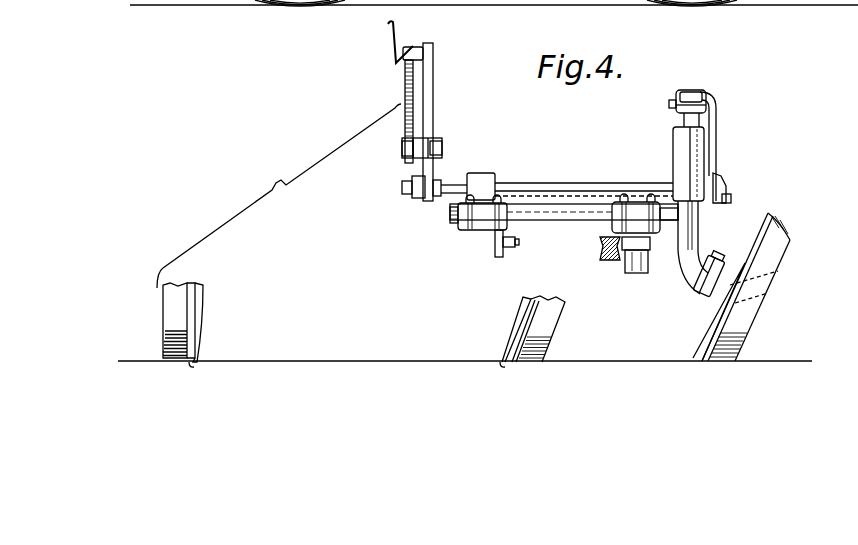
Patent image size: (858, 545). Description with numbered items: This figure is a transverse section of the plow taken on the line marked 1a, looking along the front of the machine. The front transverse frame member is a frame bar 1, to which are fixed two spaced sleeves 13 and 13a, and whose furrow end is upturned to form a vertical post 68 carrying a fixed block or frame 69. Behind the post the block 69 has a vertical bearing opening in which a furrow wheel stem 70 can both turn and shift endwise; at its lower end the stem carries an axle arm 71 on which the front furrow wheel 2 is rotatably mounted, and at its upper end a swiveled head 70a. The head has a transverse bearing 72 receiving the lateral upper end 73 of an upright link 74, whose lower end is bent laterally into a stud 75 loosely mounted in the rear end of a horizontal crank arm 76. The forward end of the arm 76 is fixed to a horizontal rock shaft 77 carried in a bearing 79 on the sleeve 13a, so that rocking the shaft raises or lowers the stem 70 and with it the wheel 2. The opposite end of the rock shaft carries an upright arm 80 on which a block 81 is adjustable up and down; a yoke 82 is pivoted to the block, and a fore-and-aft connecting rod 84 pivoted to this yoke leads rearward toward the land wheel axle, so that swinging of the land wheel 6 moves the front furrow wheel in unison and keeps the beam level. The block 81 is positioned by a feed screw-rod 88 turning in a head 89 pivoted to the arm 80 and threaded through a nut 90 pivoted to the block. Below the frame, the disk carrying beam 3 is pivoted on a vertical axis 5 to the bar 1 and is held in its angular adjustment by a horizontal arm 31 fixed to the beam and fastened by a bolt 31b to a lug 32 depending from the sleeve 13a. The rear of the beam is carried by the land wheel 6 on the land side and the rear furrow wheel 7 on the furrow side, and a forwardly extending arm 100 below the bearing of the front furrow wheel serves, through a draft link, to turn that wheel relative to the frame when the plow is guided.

The frame bar 1 is at (594, 221).
The car body 1a is at (333, 18).
The front furrow wheel 2 is at (776, 268).
The disk carrying beam 3 is at (607, 258).
The vertical axis 5 is at (633, 272).
The land wheel 6 is at (204, 306).
The rear furrow wheel 7 is at (522, 312).
The sleeve 13 is at (645, 213).
The sleeve 13a is at (478, 232).
The horizontal arm 31 is at (515, 247).
The bolt 31b is at (519, 242).
The lug 32 is at (497, 250).
The vertical post 68 is at (680, 157).
The block or frame 69 is at (673, 171).
The furrow wheel stem 70 is at (699, 233).
The head 70a is at (702, 93).
The axle arm 71 is at (770, 282).
The transverse bearing 72 is at (680, 98).
The lateral upper end 73 is at (672, 106).
The upright link 74 is at (717, 131).
The stud 75 is at (730, 200).
The horizontal arm 76 is at (725, 186).
The rock shaft 77 is at (593, 182).
The bearing 79 is at (495, 177).
The upright arm 80 is at (434, 172).
The block 81 is at (441, 145).
The yoke 82 is at (443, 155).
The connecting rod 84 is at (428, 156).
The adjusting feed screw-rod 88 is at (405, 86).
The head 89 is at (416, 47).
The nut 90 is at (403, 151).
The forwardly extending arm 100 is at (712, 262).